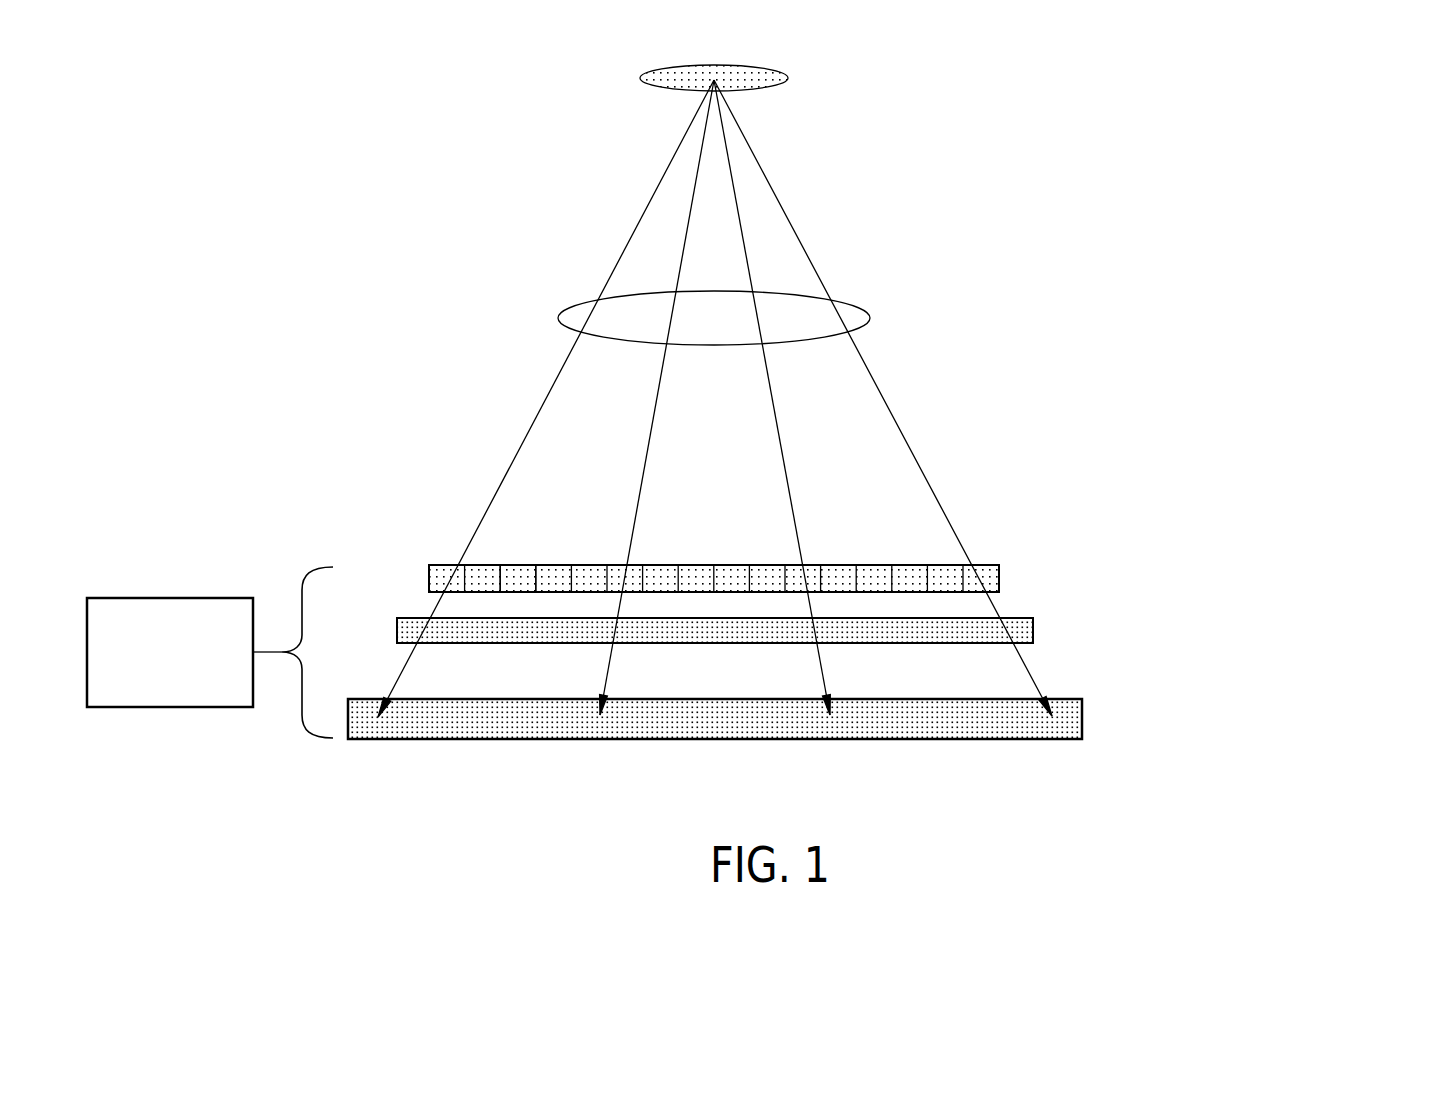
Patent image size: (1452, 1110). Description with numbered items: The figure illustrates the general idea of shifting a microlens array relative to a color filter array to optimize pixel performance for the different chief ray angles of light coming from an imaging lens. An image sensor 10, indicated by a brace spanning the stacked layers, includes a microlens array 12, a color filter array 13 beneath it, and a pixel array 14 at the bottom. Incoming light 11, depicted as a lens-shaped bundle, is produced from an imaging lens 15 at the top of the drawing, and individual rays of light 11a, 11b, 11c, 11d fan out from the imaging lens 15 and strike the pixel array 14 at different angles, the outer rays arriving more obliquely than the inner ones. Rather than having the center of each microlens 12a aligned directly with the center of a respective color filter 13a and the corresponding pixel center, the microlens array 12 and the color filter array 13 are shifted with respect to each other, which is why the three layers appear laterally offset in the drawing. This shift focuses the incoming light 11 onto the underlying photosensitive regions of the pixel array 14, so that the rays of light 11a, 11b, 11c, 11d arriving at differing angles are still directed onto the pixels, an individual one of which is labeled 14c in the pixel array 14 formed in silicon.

The image sensor 10 is at (168, 598).
The incoming light 11 is at (870, 318).
The ray of light 11a is at (520, 443).
The ray of light 11b is at (635, 512).
The ray of light 11c is at (795, 509).
The ray of light 11d is at (906, 438).
The microlens array 12 is at (1000, 575).
The microlens 12a is at (515, 578).
The color filter array 13 is at (1033, 630).
The color filter 13a is at (515, 632).
The pixel array 14 is at (1082, 718).
The pixel 14c is at (518, 722).
The imaging lens 15 is at (788, 78).